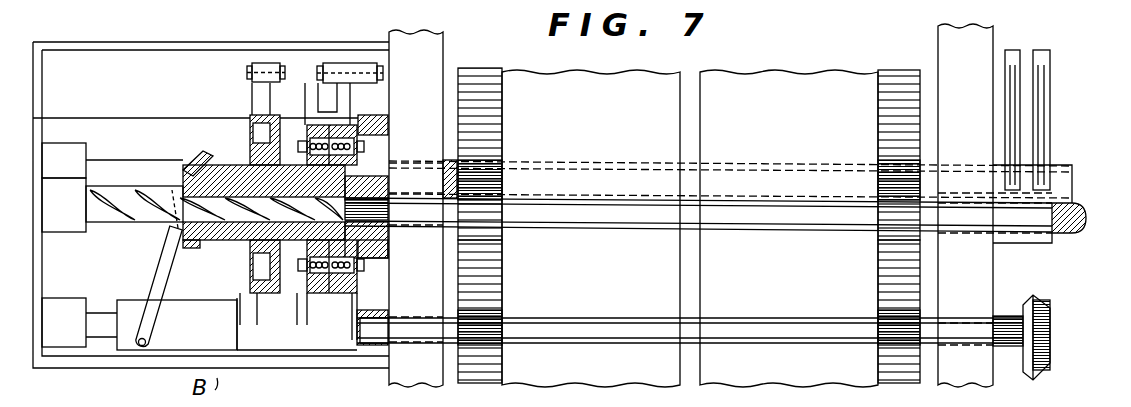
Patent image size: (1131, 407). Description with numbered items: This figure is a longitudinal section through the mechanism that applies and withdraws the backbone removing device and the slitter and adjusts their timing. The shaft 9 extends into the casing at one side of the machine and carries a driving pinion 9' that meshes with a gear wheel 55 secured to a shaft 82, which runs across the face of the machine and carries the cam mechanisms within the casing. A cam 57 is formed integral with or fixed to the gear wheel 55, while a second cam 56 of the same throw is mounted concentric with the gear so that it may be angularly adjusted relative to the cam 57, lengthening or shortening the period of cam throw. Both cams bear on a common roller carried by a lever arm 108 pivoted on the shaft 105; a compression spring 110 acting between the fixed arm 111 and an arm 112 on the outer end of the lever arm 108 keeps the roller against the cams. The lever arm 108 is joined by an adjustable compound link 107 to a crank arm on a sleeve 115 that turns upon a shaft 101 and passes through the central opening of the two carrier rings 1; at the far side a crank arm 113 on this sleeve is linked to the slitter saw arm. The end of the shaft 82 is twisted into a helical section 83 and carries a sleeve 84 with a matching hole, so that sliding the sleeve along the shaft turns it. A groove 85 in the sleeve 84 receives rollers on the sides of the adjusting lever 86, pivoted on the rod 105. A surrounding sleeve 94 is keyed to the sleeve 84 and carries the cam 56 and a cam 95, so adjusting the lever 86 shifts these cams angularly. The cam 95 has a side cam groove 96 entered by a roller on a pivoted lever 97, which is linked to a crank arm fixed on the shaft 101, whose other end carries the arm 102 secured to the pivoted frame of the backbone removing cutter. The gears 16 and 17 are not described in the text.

The carrier rings 1 is at (730, 205).
The shaft 9 is at (703, 331).
The driving pinion 9' is at (388, 344).
The gear 16 is at (490, 264).
The gear 17 is at (490, 88).
The gear wheel 55 is at (368, 288).
The cam 56 is at (313, 291).
The cam 57 is at (352, 254).
The shaft 82 is at (653, 224).
The helical section 83 is at (156, 213).
The sleeve 84 is at (248, 258).
The groove 85 is at (251, 315).
The lever 86 is at (157, 273).
The sleeve 94 is at (237, 165).
The cam 95 is at (258, 143).
The cam groove 96 is at (250, 137).
The pivoted lever 97 is at (262, 92).
The shaft 101 is at (607, 165).
The arm 102 is at (1043, 122).
The shaft 105 is at (96, 321).
The link 107 is at (343, 63).
The lever arm 108 is at (344, 87).
The compression spring 110 is at (858, 402).
The fixed arm 111 is at (383, 68).
The arm 112 is at (362, 60).
The crank arm 113 is at (1010, 105).
The sleeve 115 is at (670, 165).